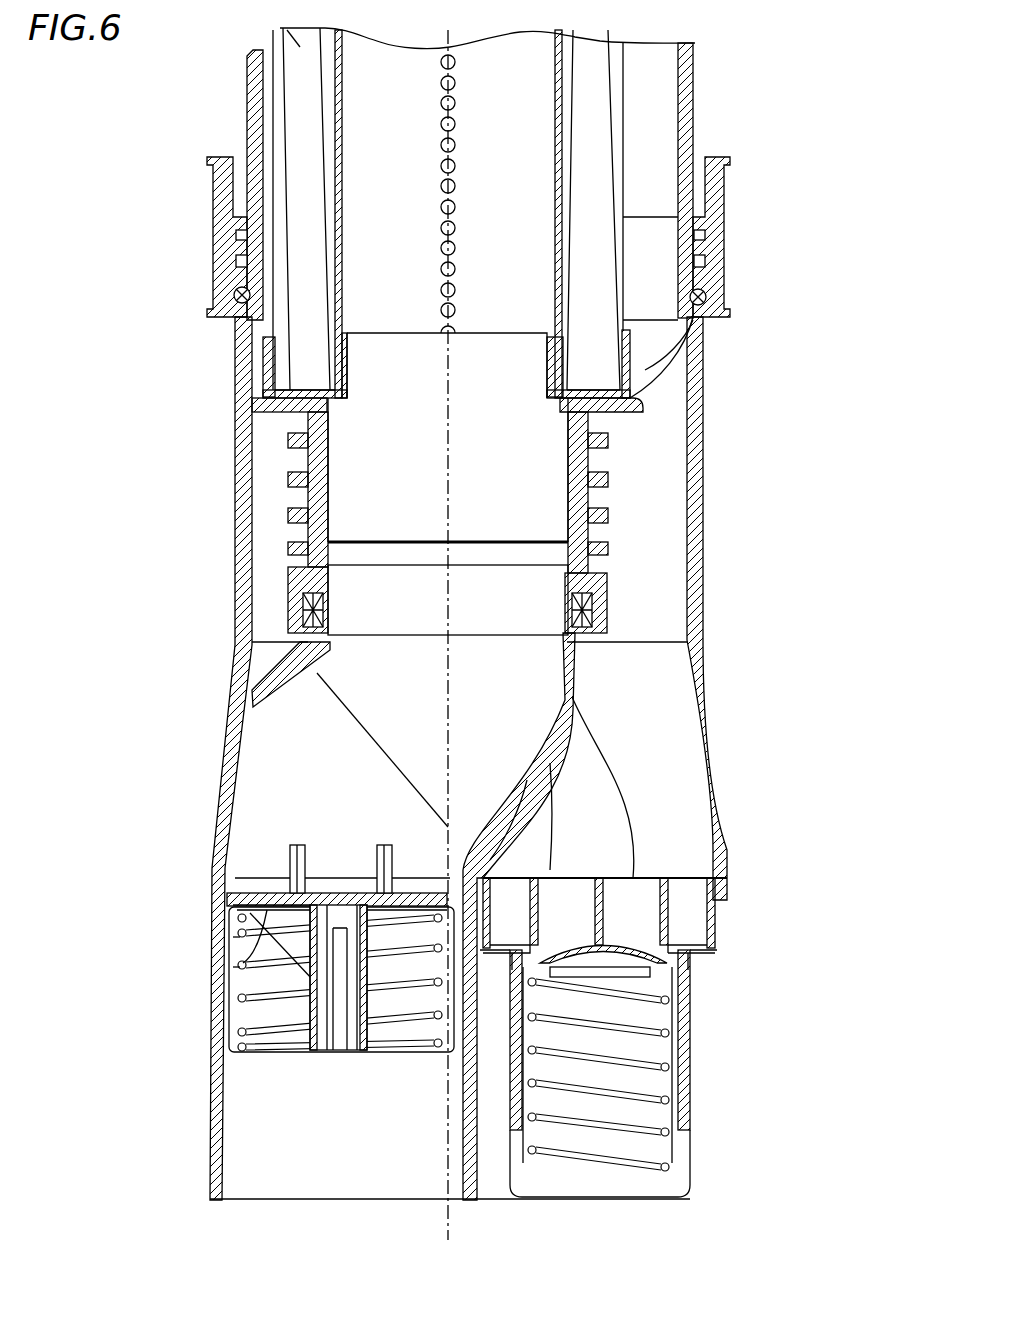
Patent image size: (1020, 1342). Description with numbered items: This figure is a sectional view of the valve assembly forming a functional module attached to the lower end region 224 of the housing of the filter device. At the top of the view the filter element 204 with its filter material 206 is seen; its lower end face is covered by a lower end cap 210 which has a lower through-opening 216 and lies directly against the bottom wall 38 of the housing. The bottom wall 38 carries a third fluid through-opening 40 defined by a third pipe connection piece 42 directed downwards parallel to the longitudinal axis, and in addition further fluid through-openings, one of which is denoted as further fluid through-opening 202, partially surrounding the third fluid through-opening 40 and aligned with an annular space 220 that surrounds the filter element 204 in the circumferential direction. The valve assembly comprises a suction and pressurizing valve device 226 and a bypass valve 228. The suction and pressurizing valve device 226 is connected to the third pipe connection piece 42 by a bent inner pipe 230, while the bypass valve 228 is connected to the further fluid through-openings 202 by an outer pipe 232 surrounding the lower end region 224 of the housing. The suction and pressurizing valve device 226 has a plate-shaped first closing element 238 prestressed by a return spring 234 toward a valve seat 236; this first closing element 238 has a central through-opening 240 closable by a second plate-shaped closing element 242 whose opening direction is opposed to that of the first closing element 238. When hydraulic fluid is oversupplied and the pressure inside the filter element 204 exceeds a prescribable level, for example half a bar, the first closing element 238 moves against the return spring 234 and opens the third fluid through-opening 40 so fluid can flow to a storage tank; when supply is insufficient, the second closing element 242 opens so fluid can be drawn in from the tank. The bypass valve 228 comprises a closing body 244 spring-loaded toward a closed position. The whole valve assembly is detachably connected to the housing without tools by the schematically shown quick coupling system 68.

The bottom wall 38 is at (603, 402).
The third fluid through-opening 40 is at (570, 490).
The third pipe connection piece 42 is at (583, 502).
The quick coupling system 68 is at (196, 217).
The further fluid through-opening 202 is at (643, 370).
The filter element 204 is at (266, 78).
The filter material 206 is at (287, 30).
The lower end cap 210 is at (282, 413).
The lower through-opening 216 is at (327, 402).
The annular space 220 is at (648, 113).
The lower end region 224 is at (685, 250).
The suction and pressurizing valve device 226 is at (263, 867).
The bypass valve 228 is at (640, 912).
The bent inner pipe 230 is at (570, 698).
The outer pipe 232 is at (697, 590).
The return spring 234 is at (263, 1003).
The valve seat 236 is at (235, 905).
The first closing element 238 is at (232, 937).
The central through-opening 240 is at (233, 967).
The second closing element 242 is at (340, 893).
The closing body 244 is at (647, 937).